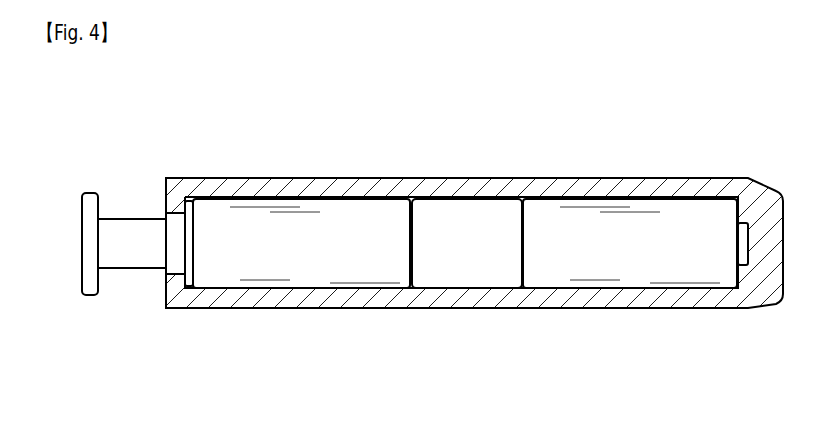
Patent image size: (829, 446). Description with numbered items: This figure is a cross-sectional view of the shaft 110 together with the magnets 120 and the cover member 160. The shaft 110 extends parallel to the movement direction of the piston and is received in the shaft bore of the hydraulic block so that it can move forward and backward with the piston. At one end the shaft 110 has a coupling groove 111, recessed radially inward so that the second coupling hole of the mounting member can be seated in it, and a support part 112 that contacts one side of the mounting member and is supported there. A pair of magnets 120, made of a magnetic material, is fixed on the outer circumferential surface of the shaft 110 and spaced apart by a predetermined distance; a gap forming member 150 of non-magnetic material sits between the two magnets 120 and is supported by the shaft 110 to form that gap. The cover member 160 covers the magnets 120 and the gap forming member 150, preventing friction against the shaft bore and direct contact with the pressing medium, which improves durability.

The shaft 110 is at (177, 222).
The coupling groove 111 is at (129, 230).
The support part 112 is at (90, 195).
The magnet 120 is at (560, 270).
The gap forming member 150 is at (465, 217).
The cover member 160 is at (631, 190).